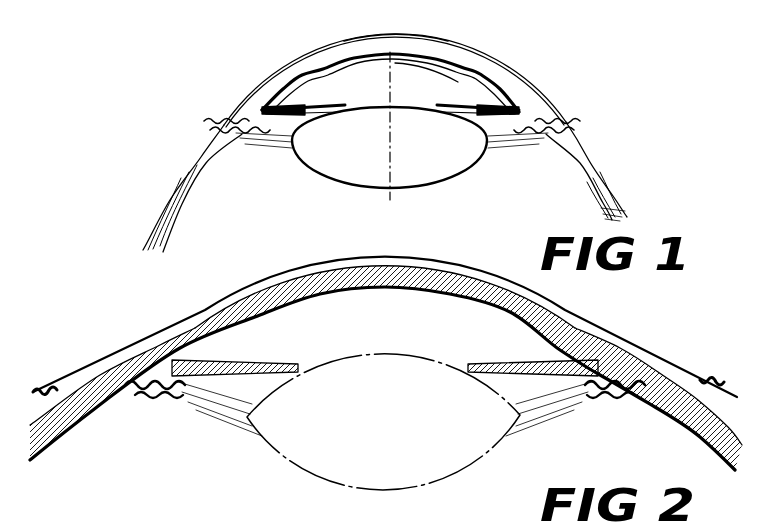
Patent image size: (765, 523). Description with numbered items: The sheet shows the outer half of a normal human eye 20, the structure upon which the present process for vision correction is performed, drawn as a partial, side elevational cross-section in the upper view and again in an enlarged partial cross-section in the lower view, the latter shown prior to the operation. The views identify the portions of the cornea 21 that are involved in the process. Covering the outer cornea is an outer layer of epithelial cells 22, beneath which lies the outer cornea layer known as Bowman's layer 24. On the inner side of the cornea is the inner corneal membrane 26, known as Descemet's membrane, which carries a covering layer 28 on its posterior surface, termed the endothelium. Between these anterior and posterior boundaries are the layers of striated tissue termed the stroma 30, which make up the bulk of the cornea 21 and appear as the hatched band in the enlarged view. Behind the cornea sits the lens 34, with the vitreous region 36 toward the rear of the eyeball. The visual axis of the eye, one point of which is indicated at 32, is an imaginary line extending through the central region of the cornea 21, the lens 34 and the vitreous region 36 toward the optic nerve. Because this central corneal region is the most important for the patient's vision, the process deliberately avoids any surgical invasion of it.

In FIG. 1, the outer half of the human eye 20 is at (541, 86).
In FIG. 1, the cornea 21 is at (268, 73).
In FIG. 1, the outer layer of epithelial cells 22 is at (307, 57).
In FIG. 2, the outer layer of epithelial cells 22 is at (467, 265).
In FIG. 1, the Bowman's layer 24 is at (393, 35).
In FIG. 2, the Bowman's layer 24 is at (375, 258).
In FIG. 1, the inner corneal membrane 26 is at (365, 60).
In FIG. 1, the covering layer 28 is at (420, 64).
In FIG. 1, the stroma 30 is at (343, 58).
In FIG. 2, the stroma 30 is at (323, 279).
In FIG. 1, the point of the visual axis 32 is at (423, 38).
In FIG. 1, the lens 34 is at (443, 160).
In FIG. 2, the lens 34 is at (420, 473).
In FIG. 1, the vitreous region 36 is at (279, 199).
In FIG. 2, the vitreous region 36 is at (227, 467).